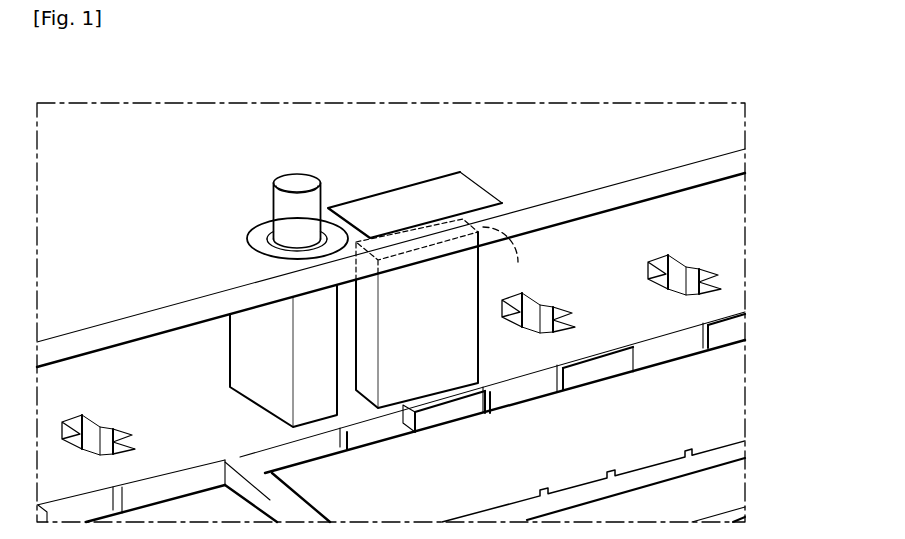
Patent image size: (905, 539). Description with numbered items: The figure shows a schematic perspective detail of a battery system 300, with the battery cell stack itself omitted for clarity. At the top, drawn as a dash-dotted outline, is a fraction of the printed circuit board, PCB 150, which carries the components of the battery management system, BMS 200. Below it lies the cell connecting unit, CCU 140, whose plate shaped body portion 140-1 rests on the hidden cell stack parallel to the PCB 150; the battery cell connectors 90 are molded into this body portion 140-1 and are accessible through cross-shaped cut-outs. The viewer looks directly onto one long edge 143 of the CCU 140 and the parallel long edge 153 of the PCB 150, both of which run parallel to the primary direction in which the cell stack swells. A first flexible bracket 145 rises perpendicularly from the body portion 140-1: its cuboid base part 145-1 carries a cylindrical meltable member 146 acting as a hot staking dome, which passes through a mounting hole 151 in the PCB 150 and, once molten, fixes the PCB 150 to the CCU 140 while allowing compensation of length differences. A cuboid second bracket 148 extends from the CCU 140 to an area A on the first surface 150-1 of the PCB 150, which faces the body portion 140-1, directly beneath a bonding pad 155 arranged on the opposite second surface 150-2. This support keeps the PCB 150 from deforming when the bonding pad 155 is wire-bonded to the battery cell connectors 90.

The battery system 300 is at (88, 67).
The printed circuit board 150 is at (428, 205).
The battery management system 200 is at (185, 125).
The first surface of the PCB 150-1 is at (723, 178).
The second surface of the PCB 150-2 is at (735, 124).
The long edge of the PCB 153 is at (735, 160).
The bonding pad 155 is at (407, 200).
The cell connecting unit 140 is at (391, 290).
The first flexible bracket 145 is at (216, 276).
The meltable member 146 is at (296, 178).
The mounting hole 151 is at (270, 237).
The base part 145-1 is at (250, 368).
The second bracket 148 is at (455, 350).
The plate shaped body portion 140-1 is at (605, 277).
The long edge of the CCU 143 is at (732, 335).
The battery cell connector 90 is at (720, 403).
The area of the first surface of the PCB A is at (514, 254).